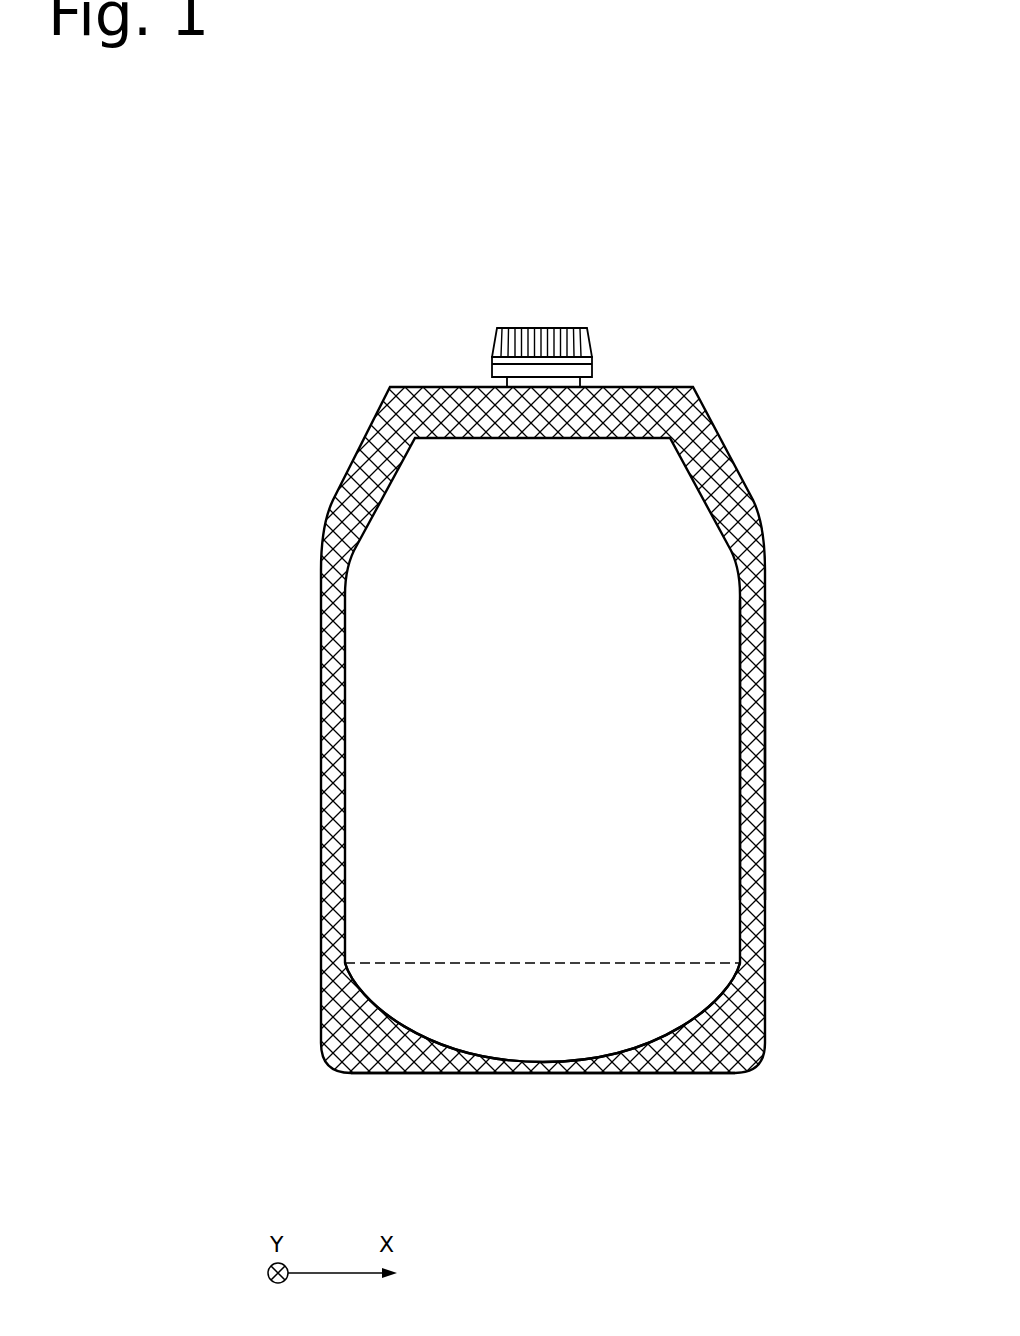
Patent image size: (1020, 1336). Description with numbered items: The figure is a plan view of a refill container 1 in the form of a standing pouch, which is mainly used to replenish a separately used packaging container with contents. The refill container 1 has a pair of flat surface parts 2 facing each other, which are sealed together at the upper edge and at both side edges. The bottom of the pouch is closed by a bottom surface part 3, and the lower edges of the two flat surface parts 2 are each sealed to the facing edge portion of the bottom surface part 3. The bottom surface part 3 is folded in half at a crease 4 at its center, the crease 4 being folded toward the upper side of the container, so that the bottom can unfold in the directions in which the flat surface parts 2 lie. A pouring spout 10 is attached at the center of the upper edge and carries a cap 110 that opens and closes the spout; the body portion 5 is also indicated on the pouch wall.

The refill container 1 is at (445, 266).
The flat surface parts 2 is at (700, 710).
The bottom surface part 3 is at (538, 998).
The crease 4 is at (428, 963).
The body portion 5 is at (743, 463).
The pouring spout 10 is at (591, 314).
The cap 110 is at (594, 345).